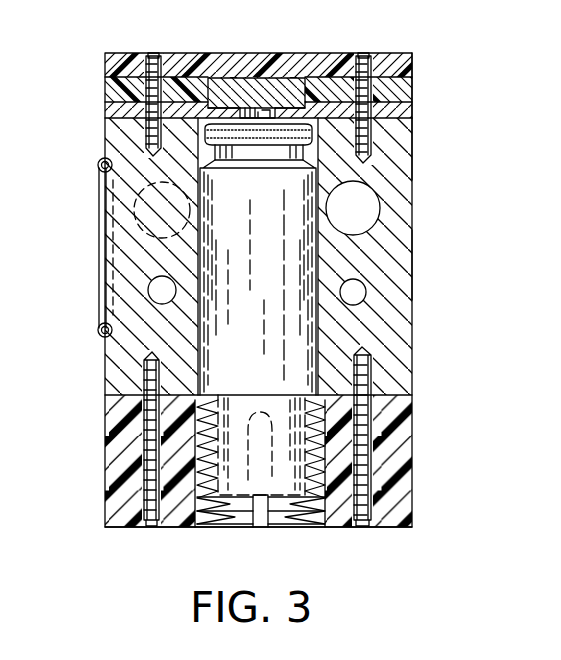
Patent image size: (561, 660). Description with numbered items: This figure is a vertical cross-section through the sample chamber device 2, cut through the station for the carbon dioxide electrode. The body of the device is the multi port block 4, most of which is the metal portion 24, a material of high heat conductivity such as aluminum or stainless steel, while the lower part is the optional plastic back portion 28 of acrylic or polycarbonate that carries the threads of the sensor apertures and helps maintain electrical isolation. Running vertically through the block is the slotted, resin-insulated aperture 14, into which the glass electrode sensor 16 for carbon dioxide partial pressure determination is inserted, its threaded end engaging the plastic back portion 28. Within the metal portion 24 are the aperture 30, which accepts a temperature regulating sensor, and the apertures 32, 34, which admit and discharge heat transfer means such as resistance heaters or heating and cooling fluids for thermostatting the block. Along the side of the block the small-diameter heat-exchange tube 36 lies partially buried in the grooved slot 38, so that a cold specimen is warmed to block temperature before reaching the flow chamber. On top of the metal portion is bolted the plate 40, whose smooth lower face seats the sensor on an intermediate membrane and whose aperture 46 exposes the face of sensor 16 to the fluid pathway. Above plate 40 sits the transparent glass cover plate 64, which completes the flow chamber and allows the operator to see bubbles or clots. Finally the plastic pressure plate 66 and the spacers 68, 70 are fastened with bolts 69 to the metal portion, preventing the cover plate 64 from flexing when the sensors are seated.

The sample chamber device 2 is at (412, 152).
The multi port block 4 is at (398, 337).
The aperture 14 is at (205, 328).
The sensor 16 is at (300, 343).
The metal portion 24 is at (400, 263).
The plastic back portion 28 is at (408, 463).
The aperture 30 is at (372, 208).
The aperture 32 is at (363, 292).
The aperture 34 is at (150, 291).
The heat-exchange tube 36 is at (100, 171).
The grooved slot 38 is at (99, 165).
The plate 40 is at (106, 118).
The aperture 46 is at (250, 108).
The cover plate 64 is at (287, 97).
The pressure plate 66 is at (106, 63).
The spacer 68 is at (106, 93).
The bolts 69 is at (152, 56).
The spacer 70 is at (412, 88).